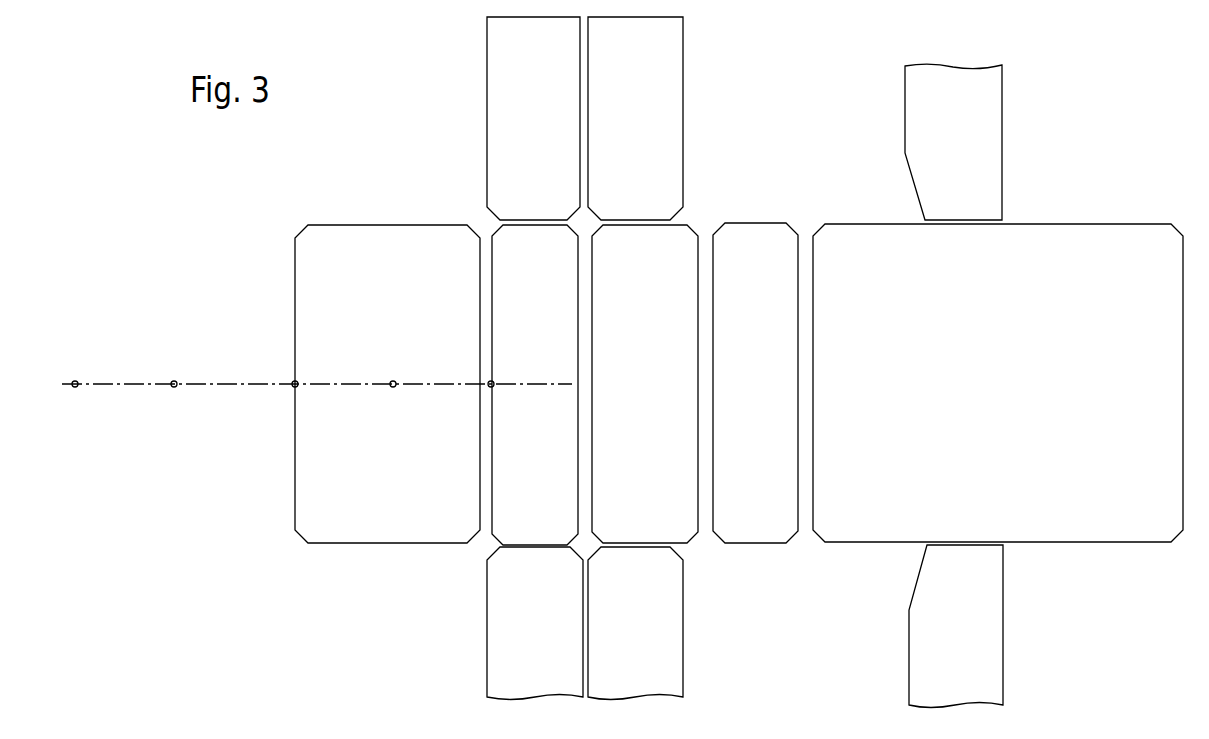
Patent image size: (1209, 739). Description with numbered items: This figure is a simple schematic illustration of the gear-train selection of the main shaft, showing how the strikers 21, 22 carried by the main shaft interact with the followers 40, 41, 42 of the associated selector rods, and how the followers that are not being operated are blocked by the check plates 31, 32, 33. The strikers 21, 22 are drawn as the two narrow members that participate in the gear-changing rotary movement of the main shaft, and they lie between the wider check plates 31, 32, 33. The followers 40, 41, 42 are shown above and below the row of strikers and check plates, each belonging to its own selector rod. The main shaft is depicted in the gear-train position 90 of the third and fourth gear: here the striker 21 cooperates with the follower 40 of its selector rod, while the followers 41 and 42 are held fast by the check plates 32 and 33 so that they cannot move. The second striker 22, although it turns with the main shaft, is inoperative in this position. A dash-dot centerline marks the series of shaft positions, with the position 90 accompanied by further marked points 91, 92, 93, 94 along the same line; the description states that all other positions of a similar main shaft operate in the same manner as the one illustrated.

The follower 40 is at (495, 41).
The follower 41 is at (673, 43).
The follower 42 is at (952, 76).
The check plate 31 is at (368, 532).
The striker 21 is at (505, 532).
The check plate 32 is at (683, 525).
The striker 22 is at (757, 528).
The check plate 33 is at (882, 528).
The gear-train position 90 is at (292, 383).
The reference point on tape centerline 91 is at (174, 381).
The reference point on tape centerline 92 is at (75, 381).
The reference point on tape centerline 93 is at (393, 381).
The reference point on tape centerline 94 is at (494, 383).